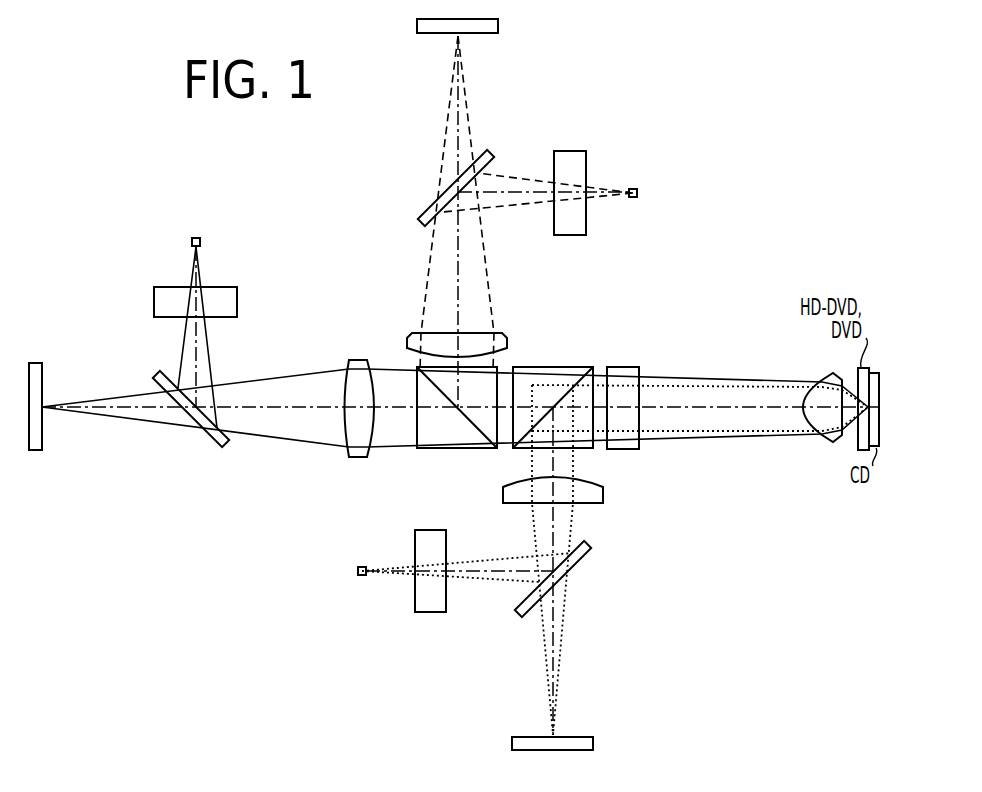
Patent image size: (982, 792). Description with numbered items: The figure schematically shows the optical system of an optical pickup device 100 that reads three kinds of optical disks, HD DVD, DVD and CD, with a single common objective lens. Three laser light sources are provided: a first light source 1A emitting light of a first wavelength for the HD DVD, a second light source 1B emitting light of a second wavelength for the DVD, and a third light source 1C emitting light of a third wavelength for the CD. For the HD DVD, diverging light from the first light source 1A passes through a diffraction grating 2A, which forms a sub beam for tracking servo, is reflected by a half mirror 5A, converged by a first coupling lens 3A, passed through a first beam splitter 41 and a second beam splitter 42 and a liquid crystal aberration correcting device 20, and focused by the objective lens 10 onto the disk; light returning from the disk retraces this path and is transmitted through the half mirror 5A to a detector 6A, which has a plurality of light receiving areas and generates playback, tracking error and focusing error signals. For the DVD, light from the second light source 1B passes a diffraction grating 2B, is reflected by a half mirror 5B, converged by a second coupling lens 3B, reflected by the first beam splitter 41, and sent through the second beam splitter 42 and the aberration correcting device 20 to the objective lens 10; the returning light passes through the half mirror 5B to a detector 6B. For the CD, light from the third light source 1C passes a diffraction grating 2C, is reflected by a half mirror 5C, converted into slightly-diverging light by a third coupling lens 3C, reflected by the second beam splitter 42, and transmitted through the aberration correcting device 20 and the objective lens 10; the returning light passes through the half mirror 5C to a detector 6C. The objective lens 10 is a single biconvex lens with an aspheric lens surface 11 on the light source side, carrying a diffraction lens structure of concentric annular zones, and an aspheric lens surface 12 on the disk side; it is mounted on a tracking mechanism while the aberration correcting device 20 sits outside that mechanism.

The optical pickup device 100 is at (294, 195).
The first light source 1A is at (190, 243).
The diffraction grating 2A is at (237, 302).
The half mirror 5A is at (210, 440).
The detector 6A is at (42, 390).
The first coupling lens 3A is at (358, 458).
The first beam splitter 41 is at (462, 449).
The second beam splitter 42 is at (565, 367).
The liquid crystal aberration correcting device 20 is at (622, 367).
The second coupling lens 3B is at (410, 333).
The third coupling lens 3C is at (604, 496).
The objective lens 10 is at (815, 393).
The aspheric lens surface 11 is at (825, 440).
The aspheric lens surface 12 is at (843, 438).
The second light source 1B is at (637, 193).
The diffraction grating 2B is at (574, 151).
The half mirror 5B is at (430, 200).
The detector 6B is at (480, 33).
The third light source 1C is at (358, 571).
The diffraction grating 2C is at (431, 612).
The half mirror 5C is at (578, 566).
The detector 6C is at (580, 737).